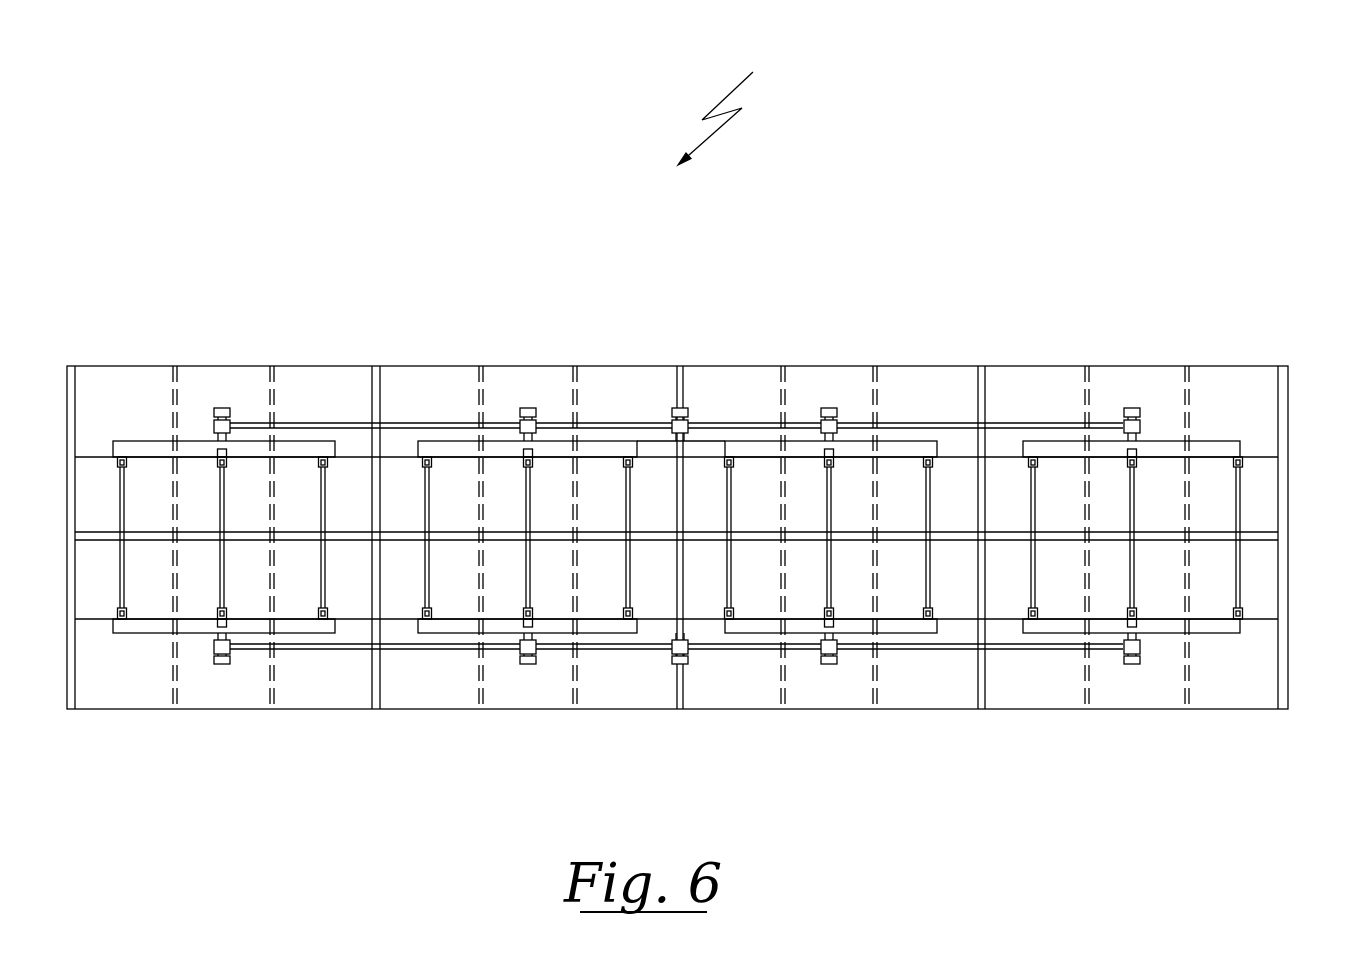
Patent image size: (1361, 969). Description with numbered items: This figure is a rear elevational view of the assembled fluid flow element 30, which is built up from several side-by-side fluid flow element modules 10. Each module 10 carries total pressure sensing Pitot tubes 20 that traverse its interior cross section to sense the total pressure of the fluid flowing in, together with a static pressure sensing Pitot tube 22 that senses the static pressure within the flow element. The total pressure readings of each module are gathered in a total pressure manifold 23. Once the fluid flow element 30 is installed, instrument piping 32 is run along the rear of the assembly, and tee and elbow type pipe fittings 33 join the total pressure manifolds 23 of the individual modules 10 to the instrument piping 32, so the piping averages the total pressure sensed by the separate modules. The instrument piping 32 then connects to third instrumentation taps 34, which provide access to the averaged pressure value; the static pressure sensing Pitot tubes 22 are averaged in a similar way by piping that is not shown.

The fluid flow element module 10 is at (312, 700).
The total pressure sensing Pitot tube 20 is at (930, 480).
The static pressure sensing Pitot tube 22 is at (893, 625).
The total pressure manifold 23 is at (138, 447).
The fluid flow element 30 is at (734, 100).
The instrument piping 32 is at (613, 425).
The pipe fitting 33 is at (232, 415).
The third instrumentation tap 34 is at (690, 417).